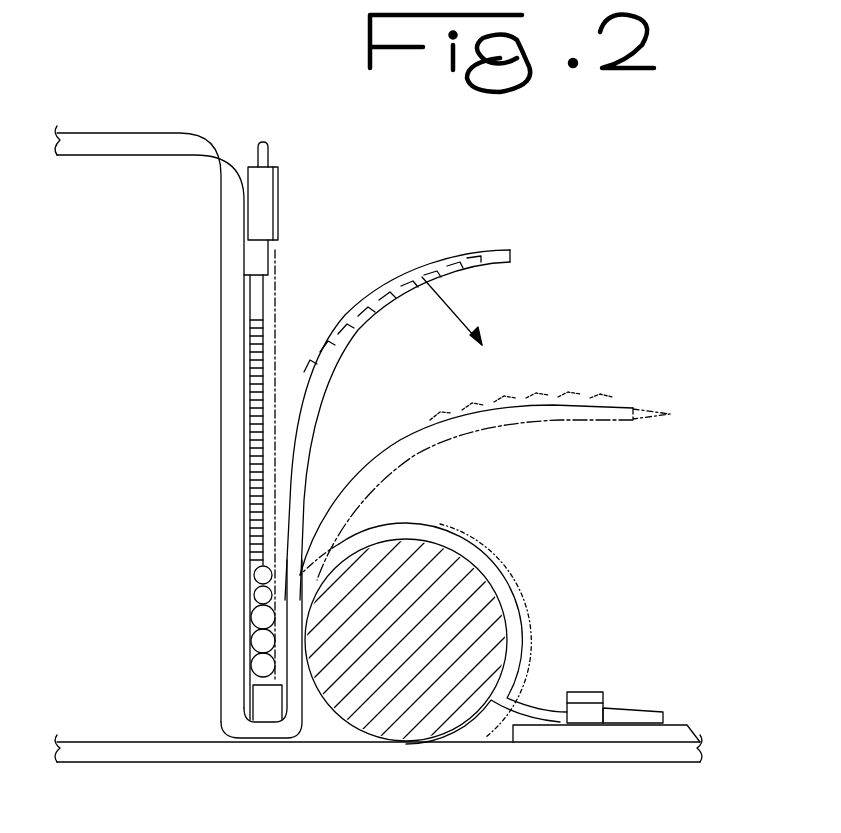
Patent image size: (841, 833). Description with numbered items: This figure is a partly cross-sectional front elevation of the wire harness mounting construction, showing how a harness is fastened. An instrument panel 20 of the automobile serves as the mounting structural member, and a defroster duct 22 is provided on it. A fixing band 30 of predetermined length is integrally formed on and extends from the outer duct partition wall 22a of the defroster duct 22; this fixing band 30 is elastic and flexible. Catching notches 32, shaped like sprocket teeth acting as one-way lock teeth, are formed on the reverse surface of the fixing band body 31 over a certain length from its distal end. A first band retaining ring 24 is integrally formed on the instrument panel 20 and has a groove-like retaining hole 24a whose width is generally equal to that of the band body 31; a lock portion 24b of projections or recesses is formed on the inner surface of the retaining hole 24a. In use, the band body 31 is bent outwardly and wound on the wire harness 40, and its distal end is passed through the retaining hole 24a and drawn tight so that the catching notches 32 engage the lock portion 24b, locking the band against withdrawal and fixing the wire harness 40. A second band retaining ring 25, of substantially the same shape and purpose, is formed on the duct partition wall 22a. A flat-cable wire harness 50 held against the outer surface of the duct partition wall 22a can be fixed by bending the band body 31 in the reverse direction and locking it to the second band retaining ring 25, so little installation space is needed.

The instrument panel 20 is at (147, 735).
The defroster duct 22 is at (150, 133).
The duct partition wall 22a is at (227, 287).
The first band retaining ring 24 is at (601, 718).
The retaining hole 24a is at (558, 725).
The lock portion 24b is at (590, 693).
The second band retaining ring 25 is at (282, 178).
The fixing band 30 is at (532, 250).
The fixing band body 31 is at (290, 280).
The catching notches 32 is at (415, 255).
The wire harness 40 is at (342, 700).
The wire harness 50 is at (253, 430).